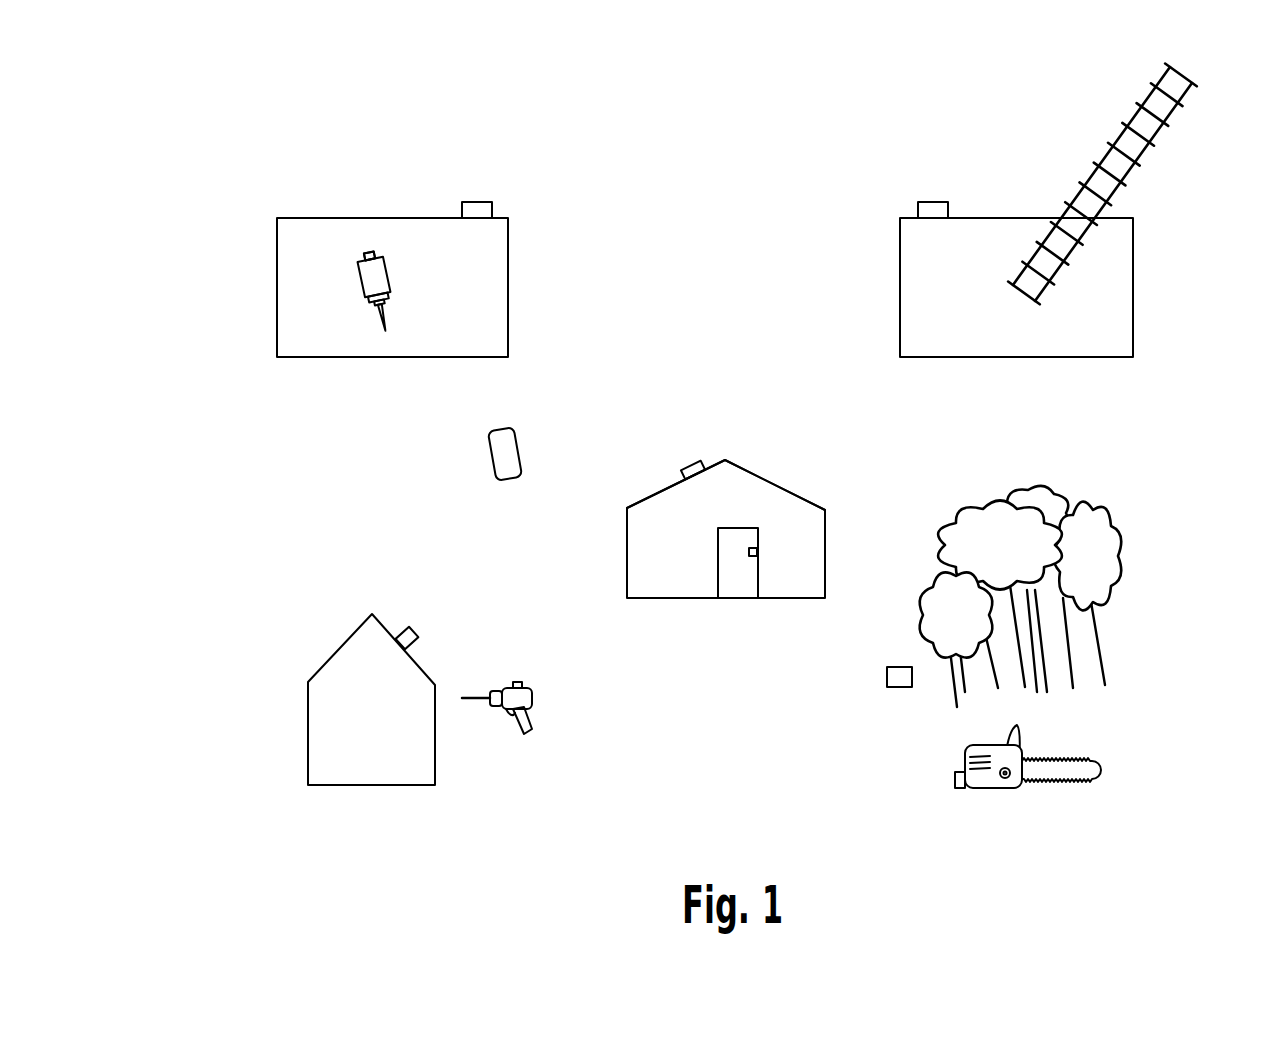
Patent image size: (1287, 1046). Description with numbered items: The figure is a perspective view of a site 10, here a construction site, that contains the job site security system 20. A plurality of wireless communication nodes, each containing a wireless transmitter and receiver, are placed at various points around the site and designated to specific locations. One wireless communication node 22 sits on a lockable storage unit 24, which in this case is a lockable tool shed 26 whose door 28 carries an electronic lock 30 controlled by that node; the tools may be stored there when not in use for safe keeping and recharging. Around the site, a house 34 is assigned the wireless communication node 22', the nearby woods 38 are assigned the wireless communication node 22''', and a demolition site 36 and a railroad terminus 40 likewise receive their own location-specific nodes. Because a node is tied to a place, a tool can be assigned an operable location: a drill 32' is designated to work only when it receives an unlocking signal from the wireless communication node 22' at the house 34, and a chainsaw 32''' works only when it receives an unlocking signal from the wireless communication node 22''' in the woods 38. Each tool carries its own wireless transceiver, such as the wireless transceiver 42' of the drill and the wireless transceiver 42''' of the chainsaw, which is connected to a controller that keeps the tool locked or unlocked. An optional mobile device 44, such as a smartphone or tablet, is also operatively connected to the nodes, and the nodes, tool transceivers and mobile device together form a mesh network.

The site 10 is at (752, 194).
The job site security system 20 is at (274, 494).
The wireless communication node 22 is at (697, 427).
The location-specific wireless communication node 22' is at (459, 608).
The location-specific wireless communication node 22''' is at (894, 636).
The lockable storage unit 24 is at (747, 470).
The lockable tool shed 26 is at (795, 492).
The door 28 is at (730, 557).
The electronic lock 30 is at (748, 557).
The drill 32' is at (538, 708).
The chainsaw 32''' is at (1001, 795).
The house 34 is at (310, 720).
The demolition site 36 is at (277, 260).
The woods 38 is at (1144, 606).
The railroad terminus 40 is at (1133, 280).
The wireless transceiver 42' is at (562, 648).
The wireless transceiver 42''' is at (893, 757).
The mobile device 44 is at (520, 448).